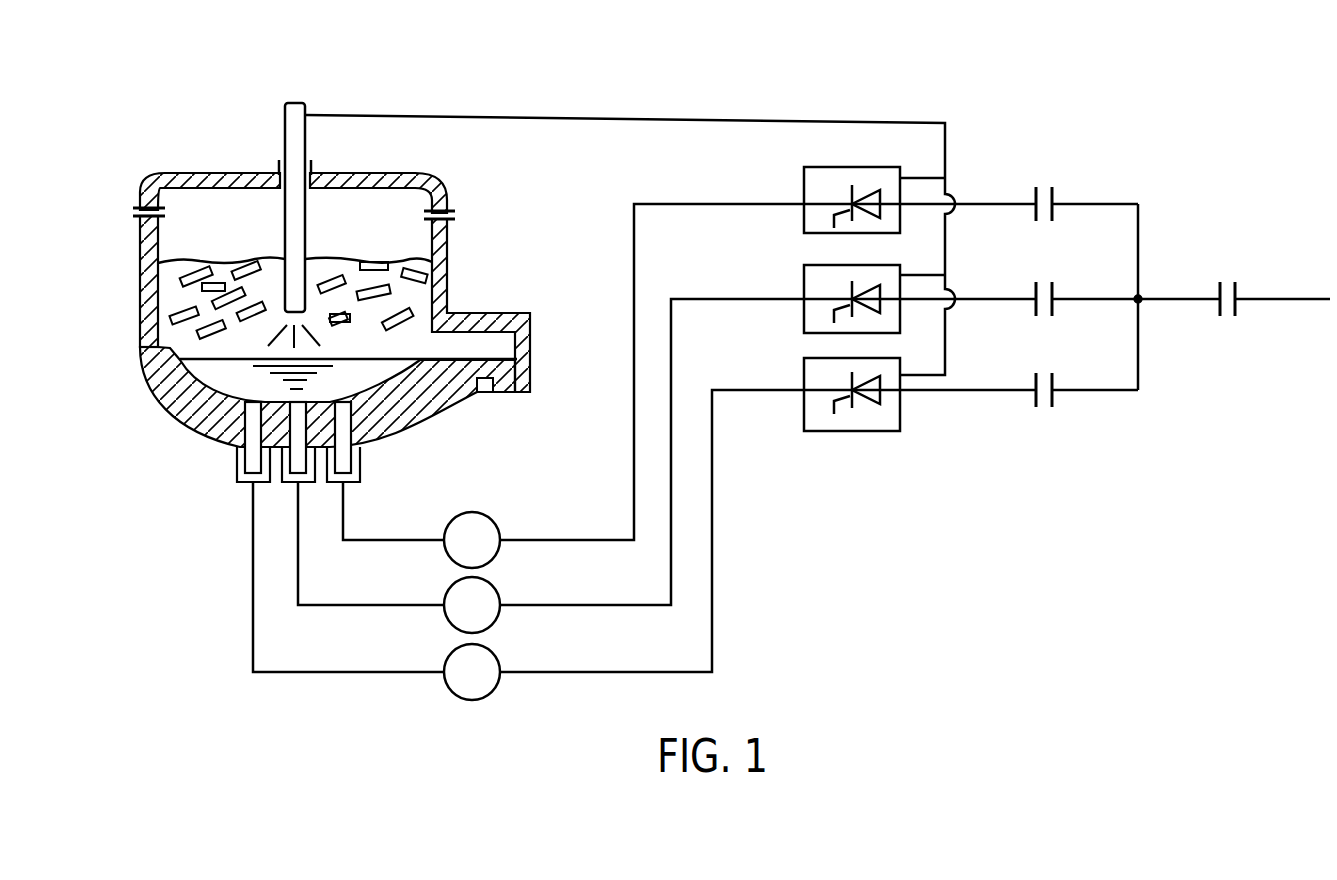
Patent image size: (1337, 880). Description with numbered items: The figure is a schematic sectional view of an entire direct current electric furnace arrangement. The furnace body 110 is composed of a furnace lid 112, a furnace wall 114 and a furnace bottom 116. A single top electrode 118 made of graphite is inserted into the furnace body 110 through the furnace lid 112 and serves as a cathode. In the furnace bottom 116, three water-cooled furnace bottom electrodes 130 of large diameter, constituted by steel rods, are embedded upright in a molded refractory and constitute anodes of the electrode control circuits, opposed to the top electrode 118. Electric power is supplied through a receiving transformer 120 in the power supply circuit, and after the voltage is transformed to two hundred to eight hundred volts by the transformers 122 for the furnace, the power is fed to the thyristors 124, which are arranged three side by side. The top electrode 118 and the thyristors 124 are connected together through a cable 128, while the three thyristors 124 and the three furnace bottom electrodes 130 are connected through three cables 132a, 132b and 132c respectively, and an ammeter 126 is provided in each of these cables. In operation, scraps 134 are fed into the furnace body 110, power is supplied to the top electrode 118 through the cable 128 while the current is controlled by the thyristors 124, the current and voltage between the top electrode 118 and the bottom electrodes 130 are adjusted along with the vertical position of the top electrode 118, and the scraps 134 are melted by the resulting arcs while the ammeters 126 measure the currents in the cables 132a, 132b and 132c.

The furnace body 110 is at (107, 264).
The furnace lid 112 is at (207, 172).
The furnace wall 114 is at (141, 333).
The furnace bottom 116 is at (215, 437).
The top electrode 118 is at (284, 131).
The receiving transformer 120 is at (1228, 288).
The transformers for the furnace 122 is at (1047, 191).
The thyristors 124 is at (850, 167).
The ammeter 126 is at (494, 521).
The cable 128 is at (594, 117).
The furnace bottom electrodes 130 is at (355, 422).
The cable 132a is at (634, 506).
The cable 132b is at (671, 580).
The cable 132c is at (712, 642).
The scraps 134 is at (396, 318).